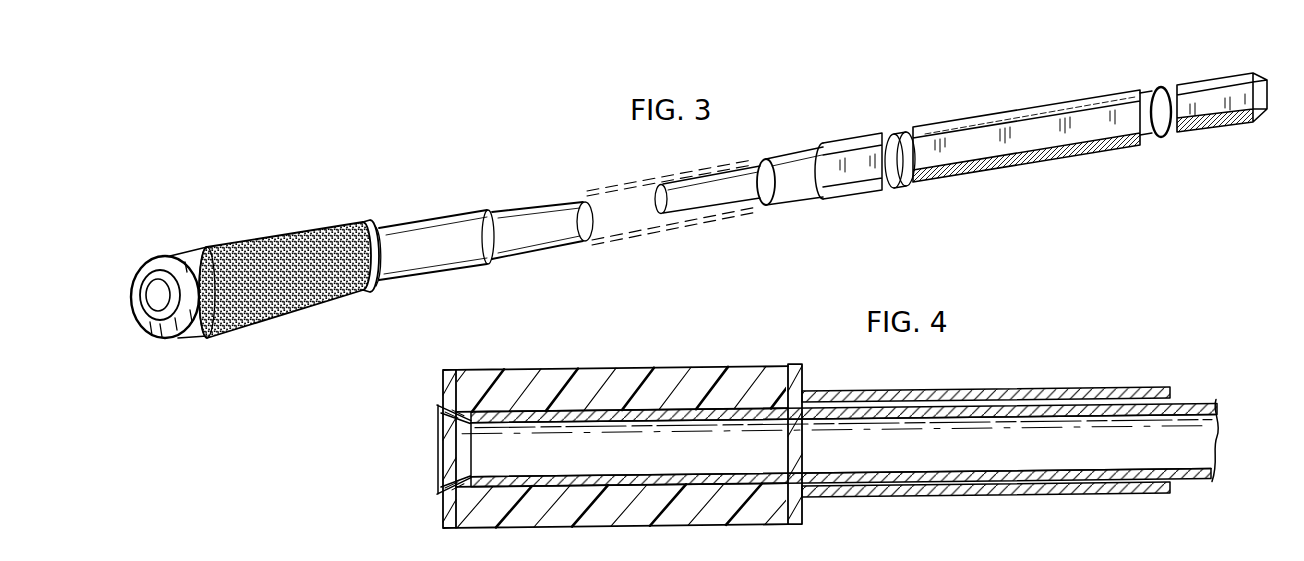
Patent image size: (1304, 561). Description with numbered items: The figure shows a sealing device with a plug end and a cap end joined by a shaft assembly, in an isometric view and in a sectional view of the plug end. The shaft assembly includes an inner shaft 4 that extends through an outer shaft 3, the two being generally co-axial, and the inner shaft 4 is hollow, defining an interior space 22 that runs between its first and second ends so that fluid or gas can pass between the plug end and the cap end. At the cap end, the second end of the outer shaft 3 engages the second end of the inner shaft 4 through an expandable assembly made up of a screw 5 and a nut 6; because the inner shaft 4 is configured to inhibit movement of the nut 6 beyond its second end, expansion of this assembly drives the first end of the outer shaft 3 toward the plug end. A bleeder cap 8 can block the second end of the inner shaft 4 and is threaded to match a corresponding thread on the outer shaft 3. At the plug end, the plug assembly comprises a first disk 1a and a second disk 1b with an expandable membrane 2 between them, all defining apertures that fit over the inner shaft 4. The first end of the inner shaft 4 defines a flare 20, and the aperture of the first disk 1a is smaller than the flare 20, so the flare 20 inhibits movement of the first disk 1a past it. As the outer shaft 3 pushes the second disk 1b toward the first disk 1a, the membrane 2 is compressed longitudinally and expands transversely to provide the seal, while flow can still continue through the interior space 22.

In FIG. 3, the first disk 1a is at (130, 280).
In FIG. 4, the first disk 1a is at (440, 369).
In FIG. 3, the second disk 1b is at (341, 224).
In FIG. 4, the second disk 1b is at (788, 366).
In FIG. 3, the expandable membrane 2 is at (205, 245).
In FIG. 4, the expandable membrane 2 is at (584, 369).
In FIG. 3, the outer shaft 3 is at (404, 217).
In FIG. 4, the outer shaft 3 is at (992, 393).
In FIG. 3, the inner shaft 4 is at (536, 203).
In FIG. 4, the inner shaft 4 is at (1216, 402).
In FIG. 3, the screw 5 is at (828, 142).
In FIG. 3, the nut 6 is at (970, 117).
In FIG. 3, the bleeder cap 8 is at (1175, 85).
In FIG. 4, the flare 20 is at (453, 476).
In FIG. 4, the hollow interior space 22 is at (1047, 449).